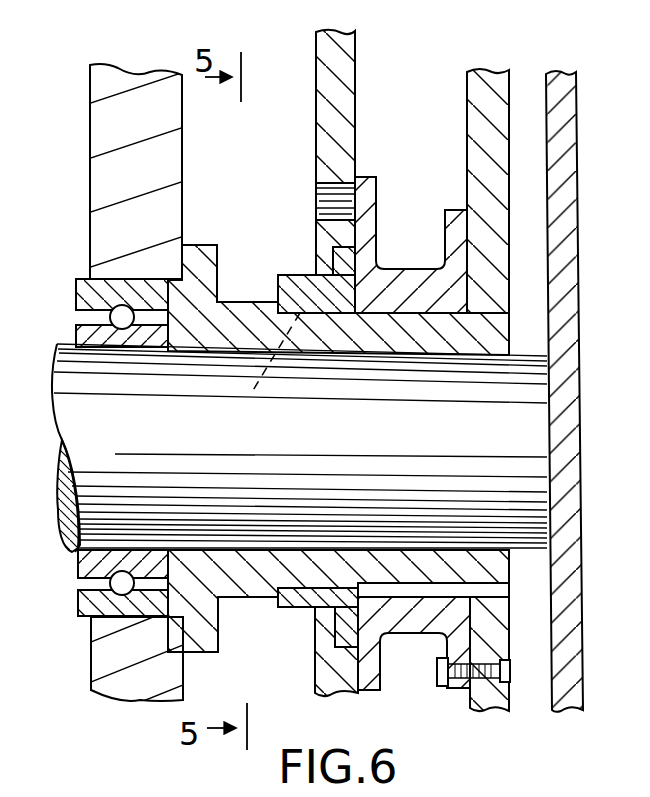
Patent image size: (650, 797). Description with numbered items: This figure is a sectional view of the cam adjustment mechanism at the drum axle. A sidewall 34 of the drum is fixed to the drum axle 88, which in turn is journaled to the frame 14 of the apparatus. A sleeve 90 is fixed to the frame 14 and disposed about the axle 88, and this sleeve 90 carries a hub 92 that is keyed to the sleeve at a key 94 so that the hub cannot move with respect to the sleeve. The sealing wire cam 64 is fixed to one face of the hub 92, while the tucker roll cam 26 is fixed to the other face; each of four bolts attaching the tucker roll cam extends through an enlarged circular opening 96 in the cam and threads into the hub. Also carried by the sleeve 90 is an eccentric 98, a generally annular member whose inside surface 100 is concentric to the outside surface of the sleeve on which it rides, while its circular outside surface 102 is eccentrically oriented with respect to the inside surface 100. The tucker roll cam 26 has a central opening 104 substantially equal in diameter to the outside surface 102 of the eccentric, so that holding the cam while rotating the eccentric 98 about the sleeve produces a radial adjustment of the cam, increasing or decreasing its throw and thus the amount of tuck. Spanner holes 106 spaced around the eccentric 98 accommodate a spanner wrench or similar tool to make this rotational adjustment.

The frame 14 is at (90, 170).
The tucker roll cam 26 is at (355, 72).
The sidewall of the drum 34 is at (582, 283).
The sealing wire cam 64 is at (467, 113).
The drum axle 88 is at (84, 439).
The sleeve 90 is at (238, 578).
The hub 92 is at (413, 280).
The key 94 is at (428, 586).
The enlarged circular opening 96 is at (316, 192).
The eccentric 98 is at (311, 607).
The inside surface of the eccentric 100 is at (318, 313).
The outside surface of the eccentric 102 is at (332, 262).
The central opening 104 is at (308, 284).
The spanner holes 106 is at (263, 373).